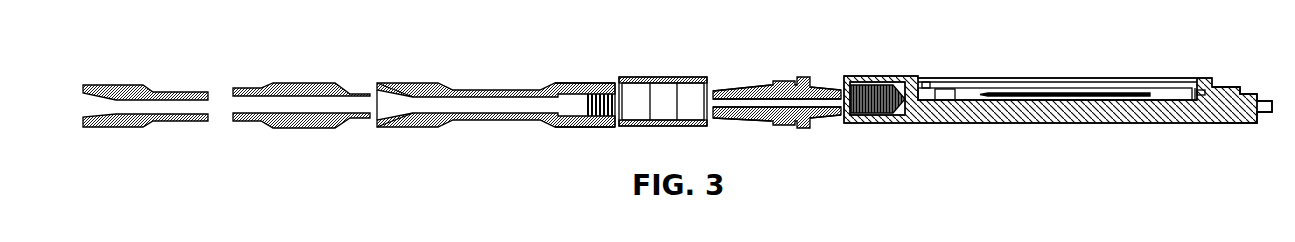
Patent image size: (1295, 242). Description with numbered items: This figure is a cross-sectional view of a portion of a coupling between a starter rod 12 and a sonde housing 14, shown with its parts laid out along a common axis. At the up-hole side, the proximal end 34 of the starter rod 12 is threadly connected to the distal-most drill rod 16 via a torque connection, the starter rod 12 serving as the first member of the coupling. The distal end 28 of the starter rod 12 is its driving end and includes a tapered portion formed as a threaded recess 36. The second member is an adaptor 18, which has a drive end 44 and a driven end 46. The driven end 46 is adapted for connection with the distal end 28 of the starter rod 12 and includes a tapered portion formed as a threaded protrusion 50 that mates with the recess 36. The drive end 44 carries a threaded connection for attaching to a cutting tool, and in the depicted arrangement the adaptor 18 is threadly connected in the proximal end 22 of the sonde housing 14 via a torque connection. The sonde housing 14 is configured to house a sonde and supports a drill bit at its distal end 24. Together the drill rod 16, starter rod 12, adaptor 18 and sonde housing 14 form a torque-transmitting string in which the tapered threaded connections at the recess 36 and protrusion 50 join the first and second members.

The starter rod 12 is at (496, 113).
The sonde housing 14 is at (1059, 139).
The drill rod 16 is at (267, 123).
The adaptor 18 is at (787, 101).
The proximal end 22 is at (878, 118).
The distal end 24 is at (1253, 122).
The distal end 28 is at (572, 78).
The proximal end 34 is at (402, 79).
The recess 36 is at (588, 110).
The drive end 44 is at (825, 82).
The driven end 46 is at (732, 80).
The protrusion 50 is at (748, 117).